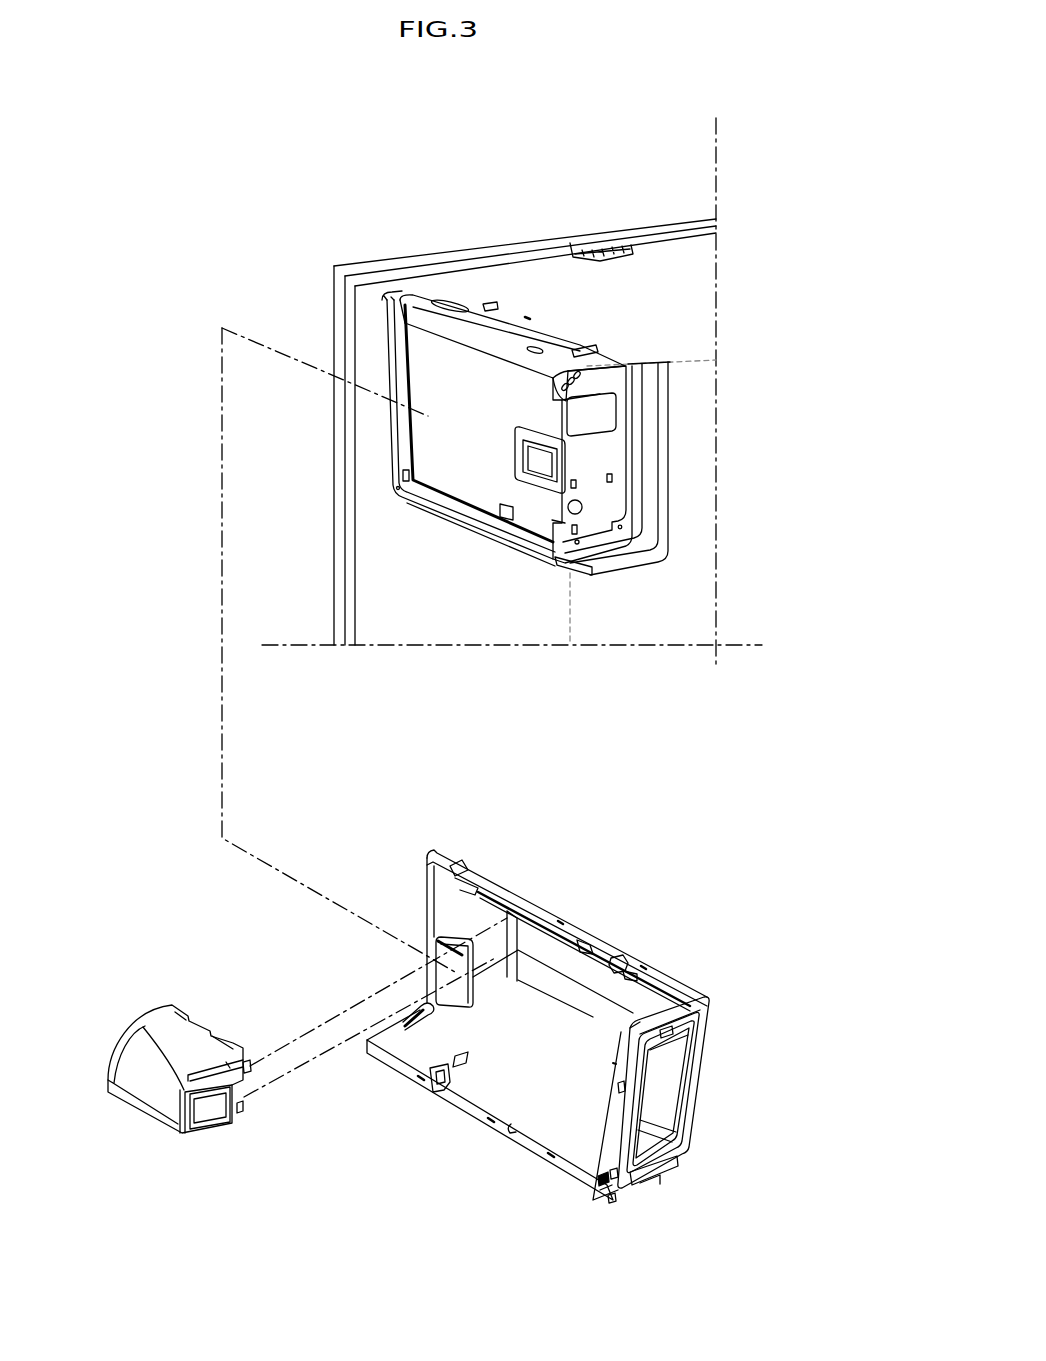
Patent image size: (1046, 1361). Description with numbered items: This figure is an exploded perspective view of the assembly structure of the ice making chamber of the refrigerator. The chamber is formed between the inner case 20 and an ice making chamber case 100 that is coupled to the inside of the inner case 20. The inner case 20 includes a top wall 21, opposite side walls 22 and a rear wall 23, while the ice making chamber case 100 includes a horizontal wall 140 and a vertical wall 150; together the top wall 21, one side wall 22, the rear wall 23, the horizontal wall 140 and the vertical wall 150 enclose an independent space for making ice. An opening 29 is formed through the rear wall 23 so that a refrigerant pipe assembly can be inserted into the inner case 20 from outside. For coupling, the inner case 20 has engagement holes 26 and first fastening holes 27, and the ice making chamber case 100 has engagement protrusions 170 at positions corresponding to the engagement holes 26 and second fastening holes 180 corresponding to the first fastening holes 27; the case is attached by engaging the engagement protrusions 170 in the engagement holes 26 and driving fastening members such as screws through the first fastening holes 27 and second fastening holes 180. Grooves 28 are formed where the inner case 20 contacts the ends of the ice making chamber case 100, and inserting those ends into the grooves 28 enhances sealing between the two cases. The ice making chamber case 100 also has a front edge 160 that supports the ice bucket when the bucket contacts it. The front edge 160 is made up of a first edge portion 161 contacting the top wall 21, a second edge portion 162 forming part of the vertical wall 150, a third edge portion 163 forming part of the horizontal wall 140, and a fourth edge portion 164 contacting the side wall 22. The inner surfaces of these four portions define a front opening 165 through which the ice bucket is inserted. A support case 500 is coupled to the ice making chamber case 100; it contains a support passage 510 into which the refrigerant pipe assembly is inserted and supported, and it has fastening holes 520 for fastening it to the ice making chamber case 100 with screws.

The inner case 20 is at (643, 258).
The top wall 21 is at (612, 278).
The side wall 22 is at (430, 360).
The rear wall 23 is at (604, 458).
The engagement hole 26 is at (491, 302).
The first fastening hole 27 is at (590, 350).
The groove 28 is at (396, 351).
The opening 29 is at (599, 416).
The ice making chamber case 100 is at (428, 826).
The horizontal wall 140 is at (494, 1086).
The vertical wall 150 is at (478, 1012).
The front edge 160 is at (662, 1092).
The first edge portion 161 is at (684, 1002).
The second edge portion 162 is at (694, 1096).
The third edge portion 163 is at (684, 1163).
The fourth edge portion 164 is at (620, 1155).
The front opening 165 is at (672, 1080).
The engagement protrusion 170 is at (617, 956).
The second fastening hole 180 is at (584, 942).
The support case 500 is at (112, 988).
The support passage 510 is at (207, 1108).
The fastening hole 520 is at (248, 1061).